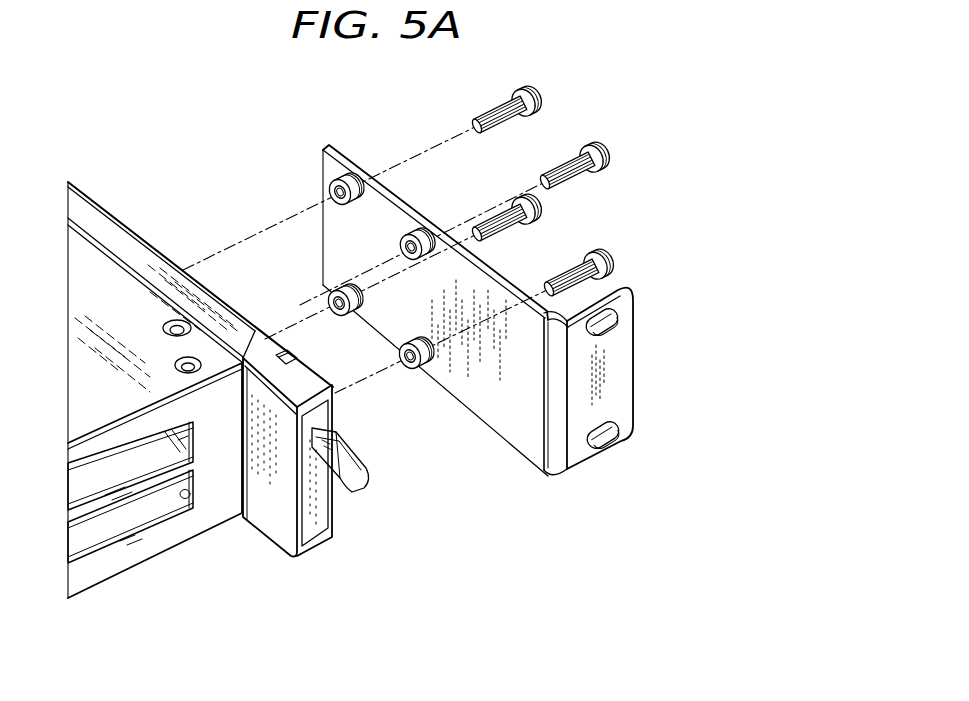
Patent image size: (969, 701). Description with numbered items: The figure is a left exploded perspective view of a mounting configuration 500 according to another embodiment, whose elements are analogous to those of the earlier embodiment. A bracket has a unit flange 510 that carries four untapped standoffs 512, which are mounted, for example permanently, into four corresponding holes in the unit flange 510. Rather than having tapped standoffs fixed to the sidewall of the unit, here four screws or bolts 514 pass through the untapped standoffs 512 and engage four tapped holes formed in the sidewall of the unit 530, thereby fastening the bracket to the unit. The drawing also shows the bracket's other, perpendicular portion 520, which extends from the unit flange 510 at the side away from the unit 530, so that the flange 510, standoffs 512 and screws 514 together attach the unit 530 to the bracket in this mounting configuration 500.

The mounting configuration 500 is at (438, 305).
The unit flange 510 is at (330, 250).
The untapped standoffs 512 is at (325, 181).
The screws/bolts 514 is at (540, 101).
The flange 520 is at (622, 371).
The chassis 530 is at (154, 560).